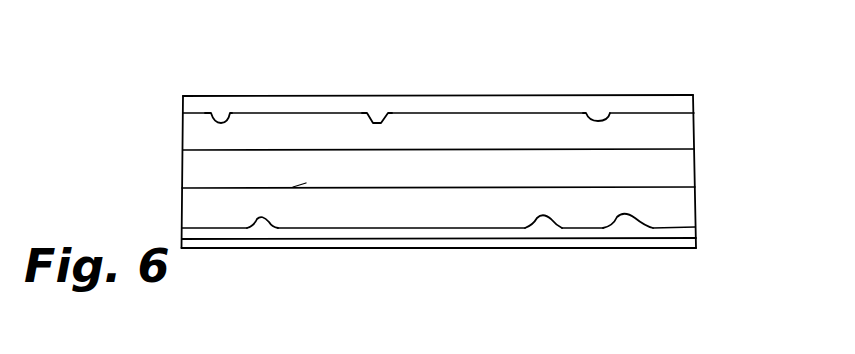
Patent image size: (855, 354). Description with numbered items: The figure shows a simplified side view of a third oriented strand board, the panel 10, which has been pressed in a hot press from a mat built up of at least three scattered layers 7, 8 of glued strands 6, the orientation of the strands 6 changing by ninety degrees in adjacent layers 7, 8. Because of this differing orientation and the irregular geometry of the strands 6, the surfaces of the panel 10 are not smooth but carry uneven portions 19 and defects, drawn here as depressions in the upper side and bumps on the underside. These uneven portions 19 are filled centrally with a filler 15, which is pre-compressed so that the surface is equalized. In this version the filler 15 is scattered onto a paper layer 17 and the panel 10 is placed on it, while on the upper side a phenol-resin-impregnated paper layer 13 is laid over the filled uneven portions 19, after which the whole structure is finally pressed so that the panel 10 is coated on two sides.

The panel 10 is at (738, 112).
The paper layer 13 is at (668, 108).
The layer 8 is at (683, 135).
The layer 7 is at (683, 172).
The strands 6 is at (683, 210).
The paper layer 17 is at (373, 240).
The uneven portions 19 is at (220, 112).
The filler 15 is at (378, 112).